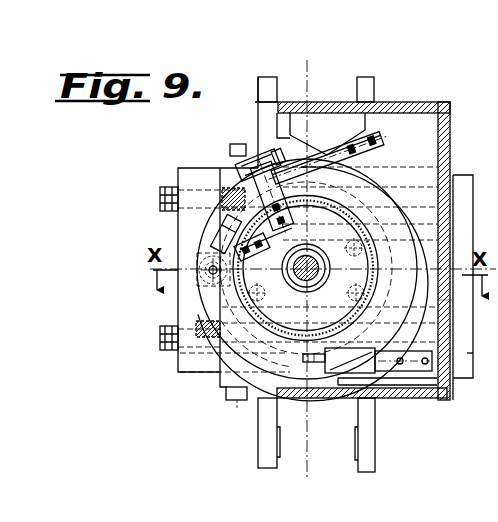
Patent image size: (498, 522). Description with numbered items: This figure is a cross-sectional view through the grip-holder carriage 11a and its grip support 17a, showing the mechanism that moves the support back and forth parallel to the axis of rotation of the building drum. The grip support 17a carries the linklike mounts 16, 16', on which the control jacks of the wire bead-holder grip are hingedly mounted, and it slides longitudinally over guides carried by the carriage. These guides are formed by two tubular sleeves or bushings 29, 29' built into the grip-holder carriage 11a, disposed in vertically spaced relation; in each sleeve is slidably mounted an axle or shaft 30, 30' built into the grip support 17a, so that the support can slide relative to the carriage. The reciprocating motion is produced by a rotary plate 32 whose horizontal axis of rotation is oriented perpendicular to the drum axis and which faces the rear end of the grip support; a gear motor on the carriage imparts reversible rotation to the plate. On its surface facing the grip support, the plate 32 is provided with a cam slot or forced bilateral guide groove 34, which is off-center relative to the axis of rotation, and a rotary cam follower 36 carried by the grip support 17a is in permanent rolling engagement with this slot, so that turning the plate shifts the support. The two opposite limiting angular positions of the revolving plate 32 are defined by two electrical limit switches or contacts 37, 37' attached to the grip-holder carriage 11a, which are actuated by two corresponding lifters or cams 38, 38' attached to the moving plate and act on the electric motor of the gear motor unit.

The linklike mount 16 is at (316, 75).
The linklike mount 16' is at (316, 438).
The tubular sleeve 29 is at (466, 263).
The tubular sleeve 29' is at (463, 367).
The grip support 17a is at (468, 355).
The grip-holder carriage 11a is at (447, 388).
The rotary plate 32 is at (407, 230).
The cam slot 34 is at (373, 213).
The electrical limit switch 37 is at (247, 146).
The electrical limit switch 37' is at (367, 391).
The lifter 38 is at (238, 184).
The lifter 38' is at (204, 231).
The rotary cam follower 36 is at (210, 274).
The shaft 30 is at (191, 260).
The shaft 30' is at (172, 349).